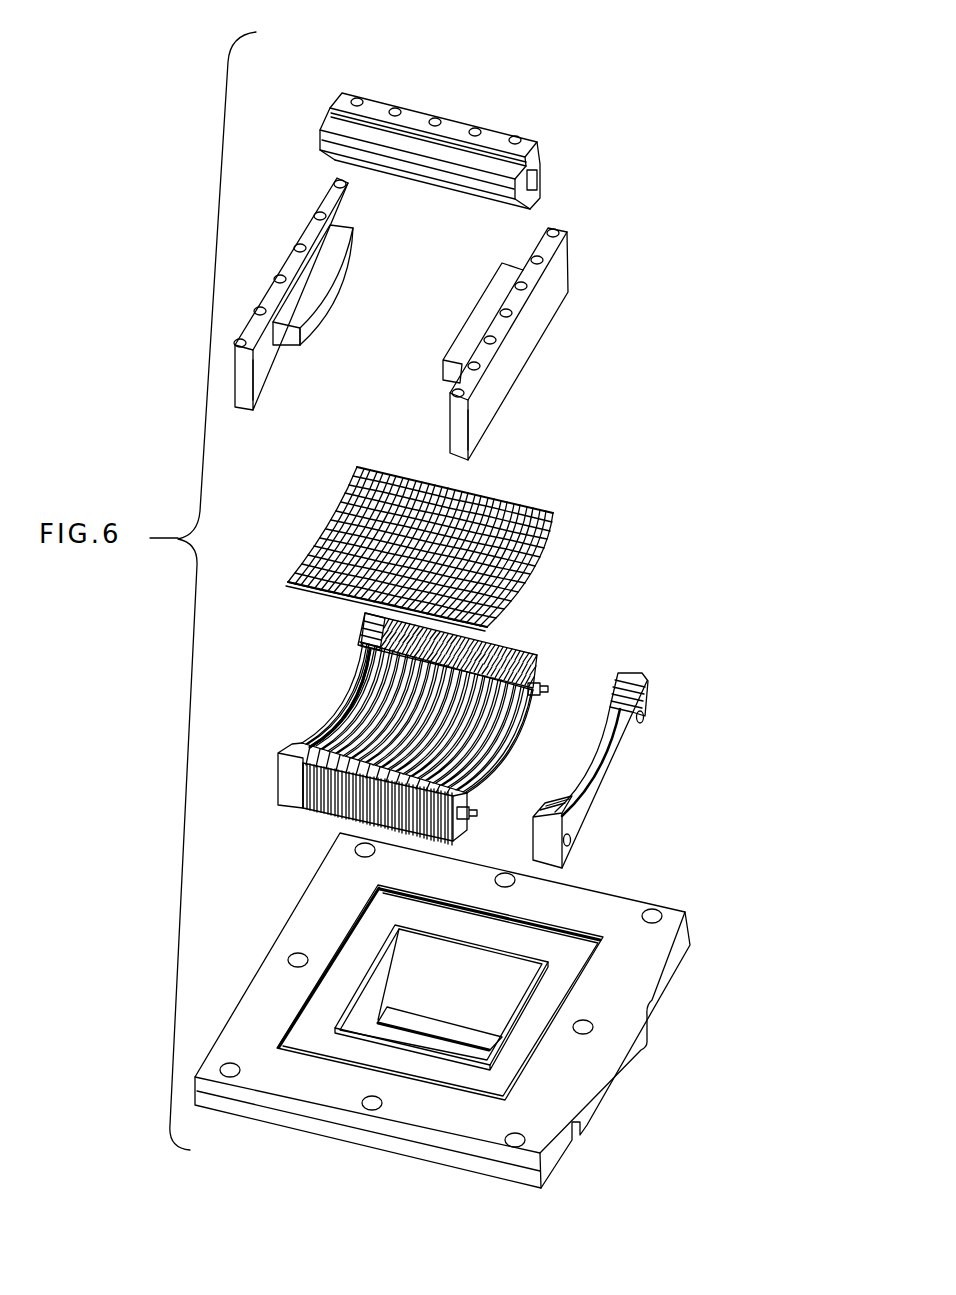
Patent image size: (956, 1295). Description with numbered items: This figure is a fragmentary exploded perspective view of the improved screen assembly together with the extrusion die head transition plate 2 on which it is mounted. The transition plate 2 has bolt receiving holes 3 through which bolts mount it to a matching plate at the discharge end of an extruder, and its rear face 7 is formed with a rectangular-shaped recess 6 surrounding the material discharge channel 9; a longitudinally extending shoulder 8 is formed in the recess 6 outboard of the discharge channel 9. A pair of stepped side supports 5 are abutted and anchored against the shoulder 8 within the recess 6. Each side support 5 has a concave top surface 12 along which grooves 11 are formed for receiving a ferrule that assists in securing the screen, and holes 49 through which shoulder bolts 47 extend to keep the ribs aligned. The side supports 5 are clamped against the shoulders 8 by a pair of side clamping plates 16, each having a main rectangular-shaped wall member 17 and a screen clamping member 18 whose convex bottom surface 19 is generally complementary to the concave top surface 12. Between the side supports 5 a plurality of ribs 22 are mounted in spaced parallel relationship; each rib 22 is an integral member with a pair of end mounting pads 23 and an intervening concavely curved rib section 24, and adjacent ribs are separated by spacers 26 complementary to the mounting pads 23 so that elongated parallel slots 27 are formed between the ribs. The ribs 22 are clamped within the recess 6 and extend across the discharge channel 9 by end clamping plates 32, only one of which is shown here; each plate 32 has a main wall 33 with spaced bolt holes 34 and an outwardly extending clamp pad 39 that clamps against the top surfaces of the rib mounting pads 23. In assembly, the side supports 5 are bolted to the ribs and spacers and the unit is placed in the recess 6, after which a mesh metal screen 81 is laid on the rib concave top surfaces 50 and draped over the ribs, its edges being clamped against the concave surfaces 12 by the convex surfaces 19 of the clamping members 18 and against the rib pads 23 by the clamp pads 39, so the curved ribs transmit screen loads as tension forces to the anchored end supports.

The transition plate 2 is at (510, 1022).
The bolt receiving holes 3 is at (652, 917).
The side supports 5 is at (287, 788).
The recess 6 is at (410, 1078).
The rear face 7 is at (313, 903).
The shoulder 8 is at (520, 1020).
The material discharge channel 9 is at (410, 975).
The grooves 11 is at (644, 770).
The concave top surface 12 is at (325, 718).
The side clamping plates 16 is at (469, 298).
The main rectangular-shaped wall member 17 is at (270, 362).
The screen clamping member 18 is at (318, 275).
The convex bottom surface 19 is at (327, 318).
The ribs 22 is at (464, 729).
The end mounting pads 23 is at (533, 684).
The concavely curved rib section 24 is at (357, 98).
The spacers 26 is at (308, 805).
The elongated parallel slots 27 is at (362, 650).
The end clamping plates 32 is at (437, 375).
The main wall 33 is at (540, 194).
The bolt holes 34 is at (532, 138).
The clamp pad 39 is at (467, 178).
The shoulder bolts 47 is at (548, 688).
The holes 49 is at (572, 840).
The rib concave top surfaces 50 is at (378, 692).
The dish-shaped mesh metal screen 81 is at (547, 541).